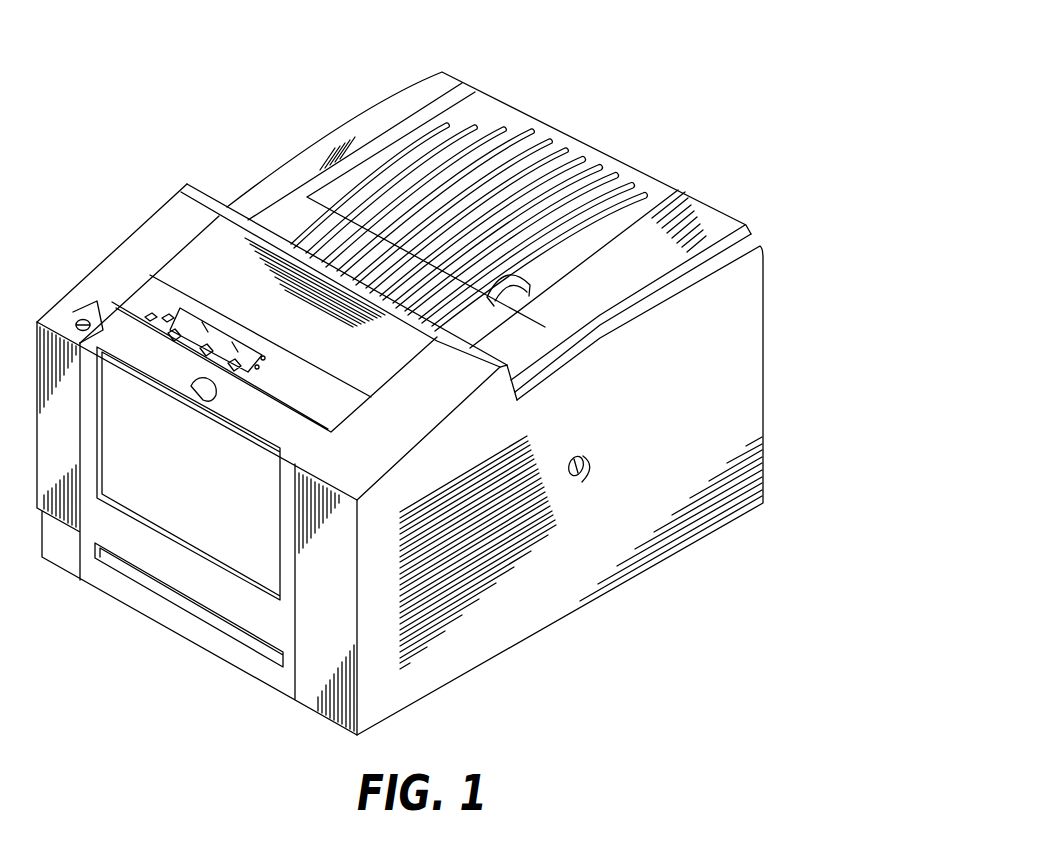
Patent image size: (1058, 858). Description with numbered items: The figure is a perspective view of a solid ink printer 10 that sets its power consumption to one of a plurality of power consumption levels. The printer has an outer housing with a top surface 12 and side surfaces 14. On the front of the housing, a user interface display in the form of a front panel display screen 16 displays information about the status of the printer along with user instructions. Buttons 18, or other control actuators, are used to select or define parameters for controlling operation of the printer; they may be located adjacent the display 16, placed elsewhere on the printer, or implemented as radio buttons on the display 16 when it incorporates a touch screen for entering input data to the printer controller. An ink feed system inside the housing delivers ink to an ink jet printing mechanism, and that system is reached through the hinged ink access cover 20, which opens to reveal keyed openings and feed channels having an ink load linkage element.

The solid ink printer 10 is at (731, 57).
The top surface 12 is at (709, 214).
The side surfaces 14 is at (752, 338).
The front panel display screen 16 is at (187, 320).
The buttons 18 is at (163, 319).
The hinged ink access cover 20 is at (490, 107).